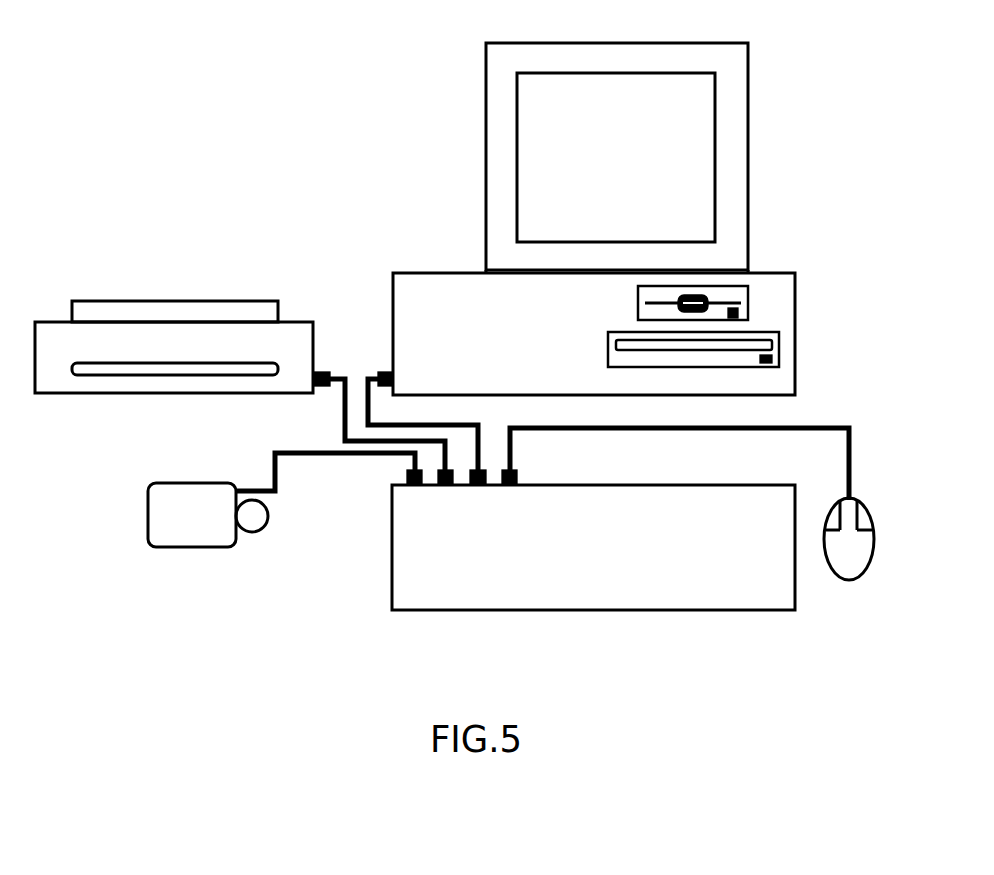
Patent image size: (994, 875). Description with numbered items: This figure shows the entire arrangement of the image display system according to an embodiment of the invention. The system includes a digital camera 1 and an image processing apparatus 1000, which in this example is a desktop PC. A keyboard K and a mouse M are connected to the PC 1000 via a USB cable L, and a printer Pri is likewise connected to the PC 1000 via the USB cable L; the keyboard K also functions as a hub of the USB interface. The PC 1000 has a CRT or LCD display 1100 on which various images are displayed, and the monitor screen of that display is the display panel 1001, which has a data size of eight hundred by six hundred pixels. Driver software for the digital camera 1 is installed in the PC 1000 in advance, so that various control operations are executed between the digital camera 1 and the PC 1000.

The display panel 1001 is at (687, 105).
The display 1100 is at (748, 145).
The image processing apparatus 1000 is at (795, 318).
The printer Pri is at (133, 300).
The digital camera 1 is at (177, 490).
The USB cable L is at (343, 418).
The keyboard K is at (695, 593).
The mouse M is at (873, 557).